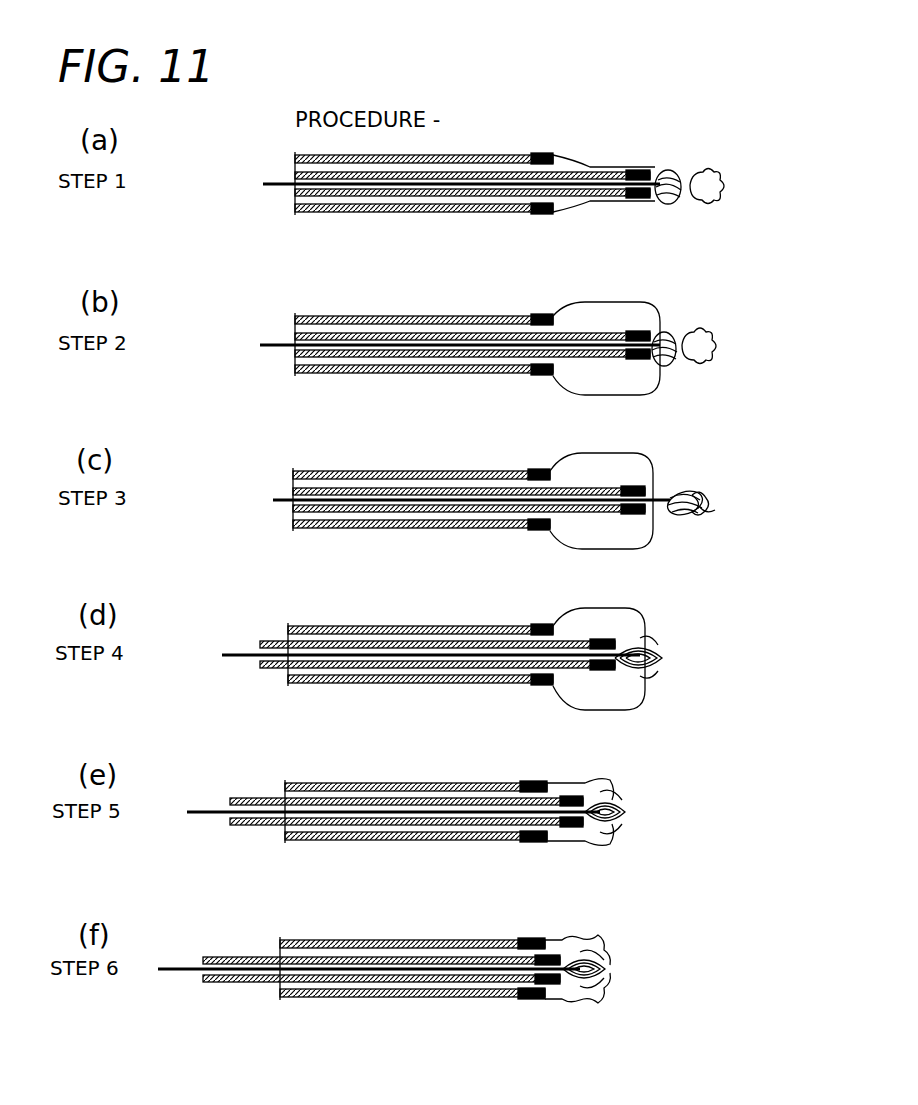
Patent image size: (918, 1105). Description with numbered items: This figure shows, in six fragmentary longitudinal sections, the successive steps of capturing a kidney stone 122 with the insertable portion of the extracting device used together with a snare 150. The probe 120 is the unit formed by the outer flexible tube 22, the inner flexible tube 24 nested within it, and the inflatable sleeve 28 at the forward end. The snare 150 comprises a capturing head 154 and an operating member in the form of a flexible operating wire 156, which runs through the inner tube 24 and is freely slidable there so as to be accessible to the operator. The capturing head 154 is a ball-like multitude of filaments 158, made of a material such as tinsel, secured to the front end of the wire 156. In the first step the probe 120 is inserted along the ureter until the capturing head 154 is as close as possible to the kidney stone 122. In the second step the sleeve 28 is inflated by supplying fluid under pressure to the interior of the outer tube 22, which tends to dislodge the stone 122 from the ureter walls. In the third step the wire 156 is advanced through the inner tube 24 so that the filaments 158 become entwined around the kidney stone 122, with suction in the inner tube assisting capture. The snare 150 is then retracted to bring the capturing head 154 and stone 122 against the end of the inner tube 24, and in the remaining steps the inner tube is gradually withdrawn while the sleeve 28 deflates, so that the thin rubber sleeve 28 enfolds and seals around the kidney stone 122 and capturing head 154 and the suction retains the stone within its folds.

The outer flexible tube 22 is at (425, 160).
The inner flexible tube 24 is at (340, 175).
The inflatable sleeve 28 is at (598, 166).
The probe 120 is at (566, 118).
The kidney stone 122 is at (706, 208).
The snare 150 is at (690, 150).
The capturing head 154 is at (678, 210).
The operating wire 156 is at (292, 186).
The filaments 158 is at (668, 170).